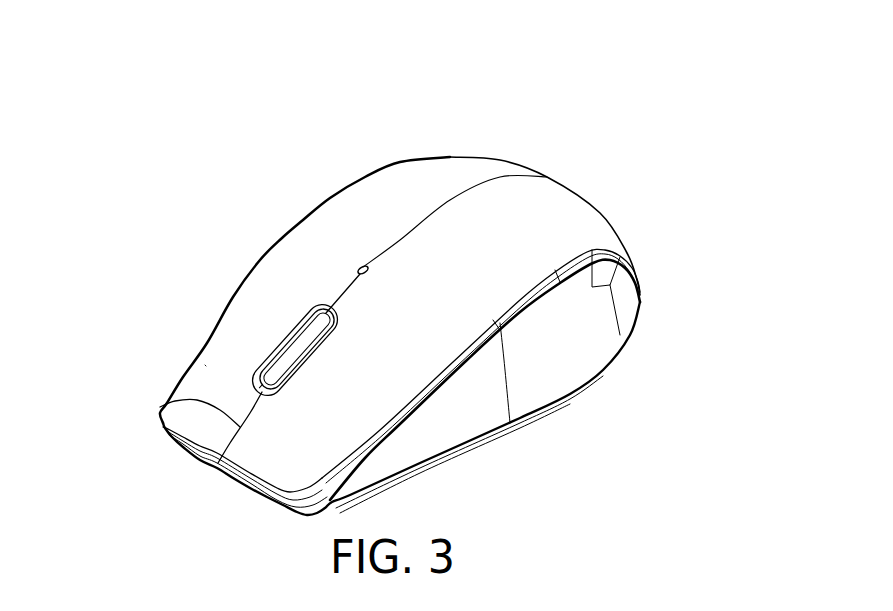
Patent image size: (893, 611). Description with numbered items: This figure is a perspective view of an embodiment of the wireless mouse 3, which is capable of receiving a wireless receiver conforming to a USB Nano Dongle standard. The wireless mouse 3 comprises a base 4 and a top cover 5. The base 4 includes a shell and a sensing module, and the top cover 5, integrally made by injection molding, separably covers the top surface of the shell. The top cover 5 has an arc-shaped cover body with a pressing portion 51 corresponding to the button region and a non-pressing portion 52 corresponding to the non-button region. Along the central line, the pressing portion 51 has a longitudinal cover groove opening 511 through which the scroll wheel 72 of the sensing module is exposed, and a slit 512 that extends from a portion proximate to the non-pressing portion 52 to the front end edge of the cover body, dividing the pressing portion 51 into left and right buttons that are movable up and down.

The wireless mouse 3 is at (548, 148).
The base 4 is at (570, 360).
The top cover 5 is at (345, 226).
The pressing portion 51 is at (210, 367).
The cover groove opening 511 is at (310, 306).
The slit 512 is at (160, 400).
The non-pressing portion 52 is at (445, 175).
The scroll wheel 72 is at (280, 346).